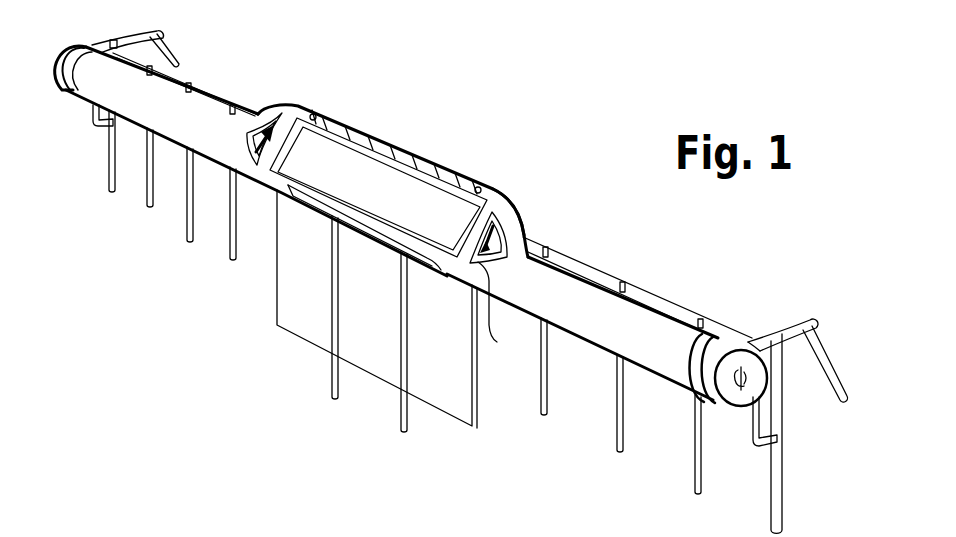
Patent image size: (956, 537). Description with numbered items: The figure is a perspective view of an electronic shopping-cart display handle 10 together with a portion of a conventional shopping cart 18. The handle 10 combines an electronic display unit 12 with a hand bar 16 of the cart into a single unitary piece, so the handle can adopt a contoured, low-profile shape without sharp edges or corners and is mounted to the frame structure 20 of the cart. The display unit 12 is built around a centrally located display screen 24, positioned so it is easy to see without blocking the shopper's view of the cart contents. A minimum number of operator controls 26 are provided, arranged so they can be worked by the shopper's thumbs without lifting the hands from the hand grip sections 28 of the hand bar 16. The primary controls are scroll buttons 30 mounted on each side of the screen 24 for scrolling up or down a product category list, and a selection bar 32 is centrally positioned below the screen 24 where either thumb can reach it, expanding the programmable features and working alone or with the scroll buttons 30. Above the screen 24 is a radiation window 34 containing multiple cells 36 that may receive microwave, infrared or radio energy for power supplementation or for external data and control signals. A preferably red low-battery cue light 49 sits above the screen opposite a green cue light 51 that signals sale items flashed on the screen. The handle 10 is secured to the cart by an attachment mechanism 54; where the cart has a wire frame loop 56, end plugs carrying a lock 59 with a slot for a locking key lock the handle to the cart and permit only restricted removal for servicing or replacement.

The electronic shopping-cart display handle 10 is at (297, 105).
The electronic display unit 12 is at (507, 217).
The hand bar 16 is at (582, 287).
The shopping cart 18 is at (813, 328).
The frame structure 20 is at (778, 477).
The display screen 24 is at (337, 152).
The operator controls 26 is at (531, 249).
The hand grip sections 28 is at (646, 315).
The scroll buttons 30 is at (502, 309).
The selection bar 32 is at (350, 232).
The radiation window 34 is at (412, 158).
The cells 36 is at (443, 173).
The low-battery cue light 49 is at (482, 189).
The cue light 51 is at (317, 116).
The attachment mechanism 54 is at (744, 398).
The wire frame loop 56 is at (758, 345).
The lock 59 is at (748, 378).